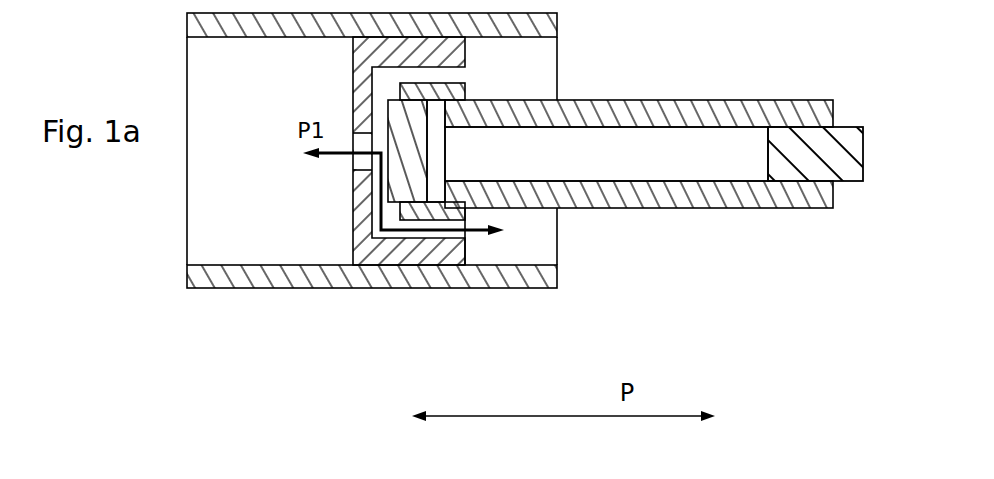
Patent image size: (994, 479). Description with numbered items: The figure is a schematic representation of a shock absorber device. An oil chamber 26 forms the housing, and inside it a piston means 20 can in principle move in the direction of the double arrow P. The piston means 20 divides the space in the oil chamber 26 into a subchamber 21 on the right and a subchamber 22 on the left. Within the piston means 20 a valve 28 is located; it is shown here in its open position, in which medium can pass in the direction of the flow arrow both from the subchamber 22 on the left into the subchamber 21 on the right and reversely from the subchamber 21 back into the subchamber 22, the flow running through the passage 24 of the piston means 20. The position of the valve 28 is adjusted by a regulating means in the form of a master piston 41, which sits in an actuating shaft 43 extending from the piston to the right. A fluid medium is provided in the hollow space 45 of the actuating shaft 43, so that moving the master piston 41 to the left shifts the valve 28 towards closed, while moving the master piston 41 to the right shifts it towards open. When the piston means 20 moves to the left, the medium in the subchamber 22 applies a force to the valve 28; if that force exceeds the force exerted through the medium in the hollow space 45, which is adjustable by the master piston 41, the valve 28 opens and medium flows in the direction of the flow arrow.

The piston means 20 is at (375, 254).
The subchamber 21 is at (535, 235).
The subchamber 22 is at (240, 230).
The passage 24 is at (400, 187).
The oil chamber 26 is at (497, 273).
The valve 28 is at (413, 180).
The master piston 41 is at (790, 165).
The actuating shaft 43 is at (680, 198).
The hollow space 45 is at (588, 160).